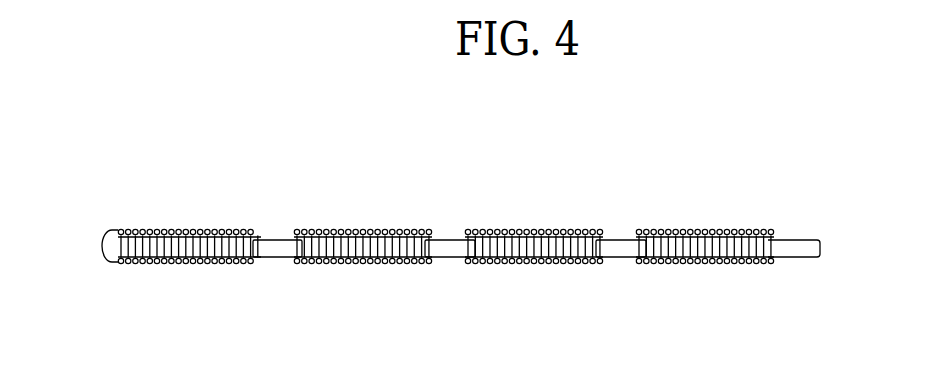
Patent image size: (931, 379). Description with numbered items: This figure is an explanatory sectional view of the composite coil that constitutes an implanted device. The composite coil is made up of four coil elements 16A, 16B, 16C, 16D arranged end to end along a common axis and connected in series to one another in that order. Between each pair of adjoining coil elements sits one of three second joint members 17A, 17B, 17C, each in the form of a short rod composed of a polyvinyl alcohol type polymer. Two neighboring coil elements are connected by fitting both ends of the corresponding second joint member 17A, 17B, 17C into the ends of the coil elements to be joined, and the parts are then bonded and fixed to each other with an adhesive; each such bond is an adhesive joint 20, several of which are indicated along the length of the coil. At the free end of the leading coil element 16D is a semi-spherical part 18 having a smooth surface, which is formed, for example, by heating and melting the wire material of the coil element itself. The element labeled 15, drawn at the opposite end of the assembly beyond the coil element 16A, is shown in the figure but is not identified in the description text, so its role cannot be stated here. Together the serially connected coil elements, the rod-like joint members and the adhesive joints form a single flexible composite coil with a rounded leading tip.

The core wire 15 is at (803, 241).
The coil element 16A is at (700, 234).
The coil element 16B is at (530, 234).
The coil element 16C is at (365, 232).
The leading coil element 16D is at (193, 231).
The second joint member 17A is at (622, 258).
The second joint member 17B is at (451, 258).
The second joint member 17C is at (282, 259).
The semi-spherical part 18 is at (98, 239).
The adhesive joint 20 is at (262, 238).